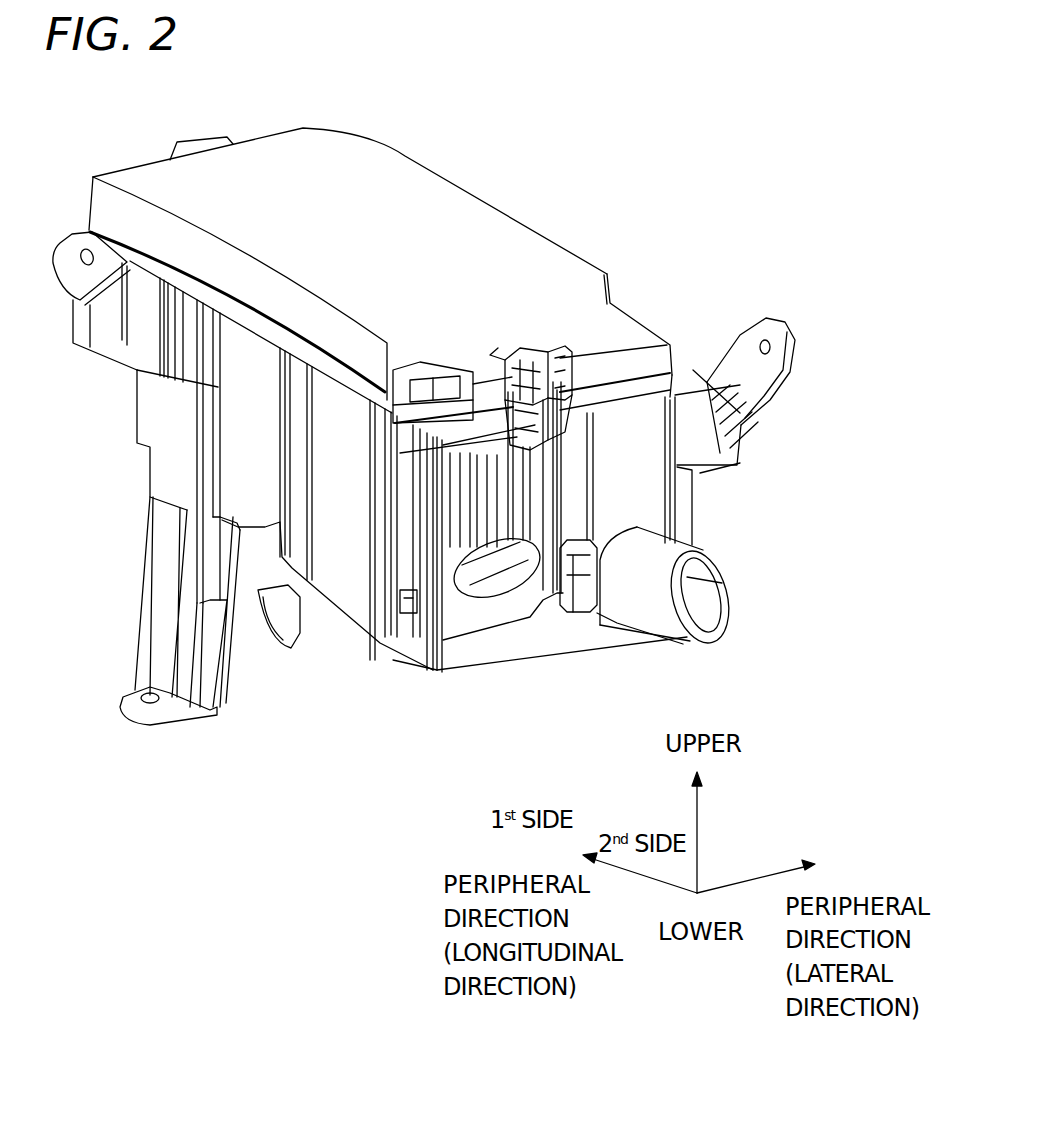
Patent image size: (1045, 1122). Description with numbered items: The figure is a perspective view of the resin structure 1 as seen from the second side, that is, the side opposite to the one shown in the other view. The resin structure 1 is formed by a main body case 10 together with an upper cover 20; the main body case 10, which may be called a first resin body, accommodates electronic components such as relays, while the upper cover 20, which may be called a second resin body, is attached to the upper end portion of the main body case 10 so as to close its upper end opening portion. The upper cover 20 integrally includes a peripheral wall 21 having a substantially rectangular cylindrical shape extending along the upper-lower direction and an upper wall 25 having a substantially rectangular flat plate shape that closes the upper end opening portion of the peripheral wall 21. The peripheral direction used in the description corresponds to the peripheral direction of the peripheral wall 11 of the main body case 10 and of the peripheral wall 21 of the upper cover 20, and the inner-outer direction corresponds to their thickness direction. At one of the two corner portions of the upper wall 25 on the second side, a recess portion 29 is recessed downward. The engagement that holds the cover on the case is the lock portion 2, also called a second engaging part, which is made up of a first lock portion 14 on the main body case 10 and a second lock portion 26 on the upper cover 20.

The resin structure 1 is at (463, 408).
The main body case 10 is at (475, 501).
The upper cover 20 is at (680, 360).
The lock portion 2 is at (542, 353).
The second lock portion 26 is at (513, 360).
The first lock portion 14 is at (566, 370).
The upper wall 25 is at (357, 207).
The peripheral wall 21 is at (163, 240).
The recess portion 29 is at (440, 373).
The peripheral wall 11 is at (348, 520).